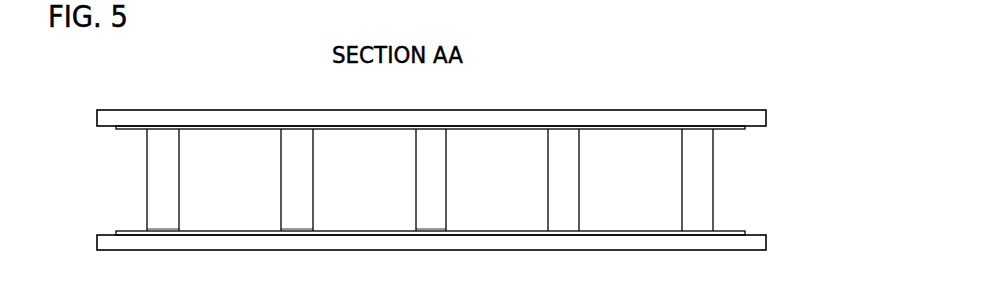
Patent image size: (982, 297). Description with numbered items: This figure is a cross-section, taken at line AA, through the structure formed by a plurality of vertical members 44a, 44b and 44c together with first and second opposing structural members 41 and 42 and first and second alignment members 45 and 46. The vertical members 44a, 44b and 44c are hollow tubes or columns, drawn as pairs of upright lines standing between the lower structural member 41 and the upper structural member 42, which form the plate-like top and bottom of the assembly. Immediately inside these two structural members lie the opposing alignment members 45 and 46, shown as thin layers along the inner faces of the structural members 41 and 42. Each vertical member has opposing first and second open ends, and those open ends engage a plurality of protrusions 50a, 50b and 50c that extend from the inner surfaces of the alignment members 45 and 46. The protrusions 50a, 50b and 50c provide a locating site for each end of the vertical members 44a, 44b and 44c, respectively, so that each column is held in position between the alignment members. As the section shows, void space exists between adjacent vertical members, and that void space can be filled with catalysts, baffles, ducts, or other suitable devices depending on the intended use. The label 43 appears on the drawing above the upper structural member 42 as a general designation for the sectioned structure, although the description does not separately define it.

The stacked assembly 43 is at (735, 72).
The second opposing structural member 42 is at (766, 117).
The second alignment member 46 is at (745, 128).
The first alignment member 45 is at (745, 232).
The first opposing structural member 41 is at (766, 242).
The vertical member 44a is at (147, 169).
The vertical member 44b is at (281, 175).
The vertical member 44c is at (416, 173).
The protrusion 50a is at (146, 228).
The protrusion 50b is at (278, 227).
The protrusion 50c is at (412, 225).